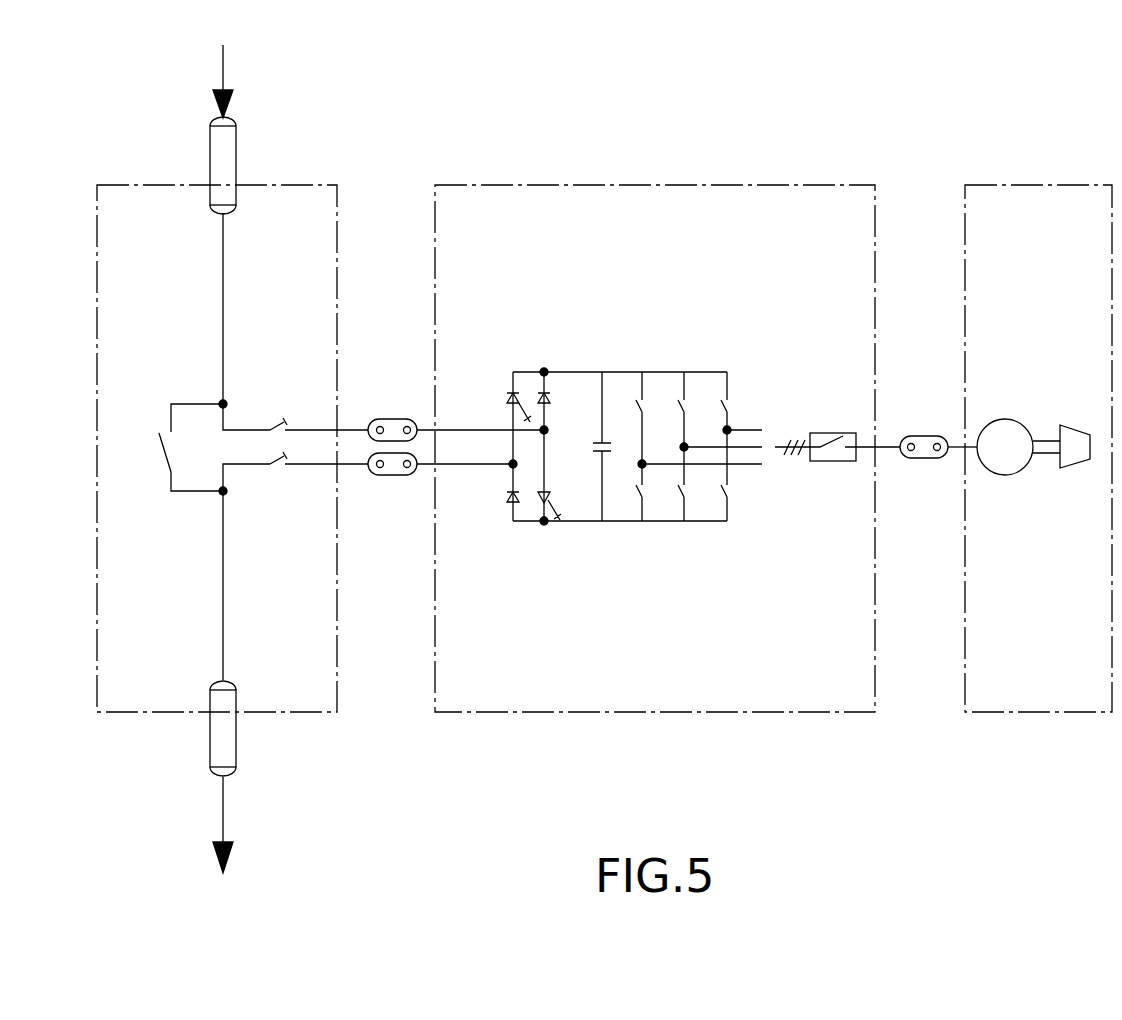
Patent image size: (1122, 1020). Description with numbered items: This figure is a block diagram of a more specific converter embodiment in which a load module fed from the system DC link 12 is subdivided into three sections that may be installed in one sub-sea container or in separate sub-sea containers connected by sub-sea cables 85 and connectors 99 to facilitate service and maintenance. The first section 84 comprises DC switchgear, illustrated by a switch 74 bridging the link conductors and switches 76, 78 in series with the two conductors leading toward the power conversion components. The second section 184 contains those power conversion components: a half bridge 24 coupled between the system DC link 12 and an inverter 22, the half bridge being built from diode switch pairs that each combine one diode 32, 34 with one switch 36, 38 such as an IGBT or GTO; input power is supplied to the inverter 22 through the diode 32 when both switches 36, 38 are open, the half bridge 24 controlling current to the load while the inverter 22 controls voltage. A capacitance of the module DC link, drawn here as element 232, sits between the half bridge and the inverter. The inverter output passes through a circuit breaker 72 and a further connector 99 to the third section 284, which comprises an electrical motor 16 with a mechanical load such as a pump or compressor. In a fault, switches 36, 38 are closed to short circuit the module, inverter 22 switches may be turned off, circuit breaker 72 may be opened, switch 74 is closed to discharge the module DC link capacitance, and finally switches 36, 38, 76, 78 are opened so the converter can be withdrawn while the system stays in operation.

The system DC link 12 is at (222, 72).
The electrical motor 16 is at (1003, 418).
The inverter 22 is at (703, 364).
The half bridge 24 is at (556, 356).
The diode 32 is at (550, 398).
The diode 34 is at (500, 518).
The switch 36 is at (552, 497).
The switch 38 is at (508, 398).
The circuit breaker 72 is at (830, 468).
The switch 74 is at (161, 458).
The switch 76 is at (283, 410).
The switch 78 is at (283, 472).
The first section 84 is at (270, 713).
The sub-sea cables 85 is at (352, 466).
The connectors 99 is at (392, 418).
The second section 184 is at (658, 713).
The capacitor 232 is at (583, 446).
The third section 284 is at (1050, 713).